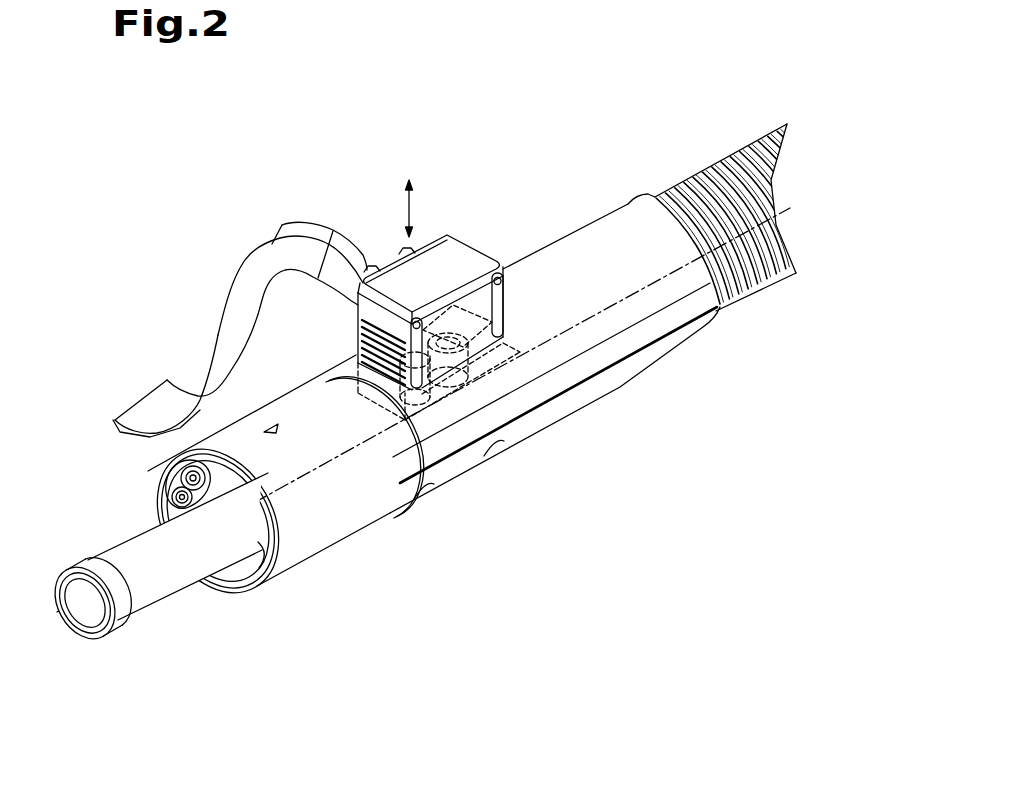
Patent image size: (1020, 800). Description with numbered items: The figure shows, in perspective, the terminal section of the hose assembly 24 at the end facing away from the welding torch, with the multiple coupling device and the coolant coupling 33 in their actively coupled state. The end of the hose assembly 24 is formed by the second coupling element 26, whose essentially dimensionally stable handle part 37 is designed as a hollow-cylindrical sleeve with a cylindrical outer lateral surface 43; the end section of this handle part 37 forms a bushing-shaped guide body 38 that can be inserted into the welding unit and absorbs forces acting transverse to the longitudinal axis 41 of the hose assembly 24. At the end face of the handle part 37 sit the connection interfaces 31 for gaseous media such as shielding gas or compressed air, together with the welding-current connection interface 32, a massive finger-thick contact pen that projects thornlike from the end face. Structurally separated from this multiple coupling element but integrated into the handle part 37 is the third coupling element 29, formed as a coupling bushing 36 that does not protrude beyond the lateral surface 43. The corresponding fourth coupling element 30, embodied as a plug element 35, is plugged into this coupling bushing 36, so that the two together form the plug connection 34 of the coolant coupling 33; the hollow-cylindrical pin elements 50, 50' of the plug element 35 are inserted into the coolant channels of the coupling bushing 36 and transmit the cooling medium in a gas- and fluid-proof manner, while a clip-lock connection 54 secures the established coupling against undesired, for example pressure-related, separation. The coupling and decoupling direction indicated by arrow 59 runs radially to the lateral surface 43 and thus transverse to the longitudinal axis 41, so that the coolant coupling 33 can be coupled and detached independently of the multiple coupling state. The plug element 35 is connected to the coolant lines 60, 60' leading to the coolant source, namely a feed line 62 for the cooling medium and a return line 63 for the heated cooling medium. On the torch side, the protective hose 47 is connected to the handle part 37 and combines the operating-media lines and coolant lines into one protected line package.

The hose assembly 24 is at (641, 127).
The second coupling element 26 is at (268, 603).
The third coupling element 29 is at (490, 360).
The fourth coupling element 30 is at (462, 232).
The connection interfaces 31 is at (205, 470).
The welding-current connection interface 32 is at (150, 590).
The coolant coupling 33 is at (350, 338).
The plug connection 34 is at (322, 222).
The plug element 35 is at (445, 250).
The coupling bushing 36 is at (505, 332).
The handle part 37 is at (618, 235).
The guide body 38 is at (328, 535).
The longitudinal axis 41 is at (150, 568).
The lateral surface 43 is at (582, 240).
The protective hose 47 is at (727, 177).
The hollow-cylindrical pin element 50 is at (444, 454).
The hollow-cylindrical pin element 50' is at (478, 434).
The clip-lock connection 54 is at (513, 333).
The coupling and decoupling direction arrow 59 is at (403, 212).
The coolant line 60 is at (157, 365).
The coolant return line 60' is at (290, 220).
The feed line 62 is at (250, 263).
The return line 63 is at (297, 225).